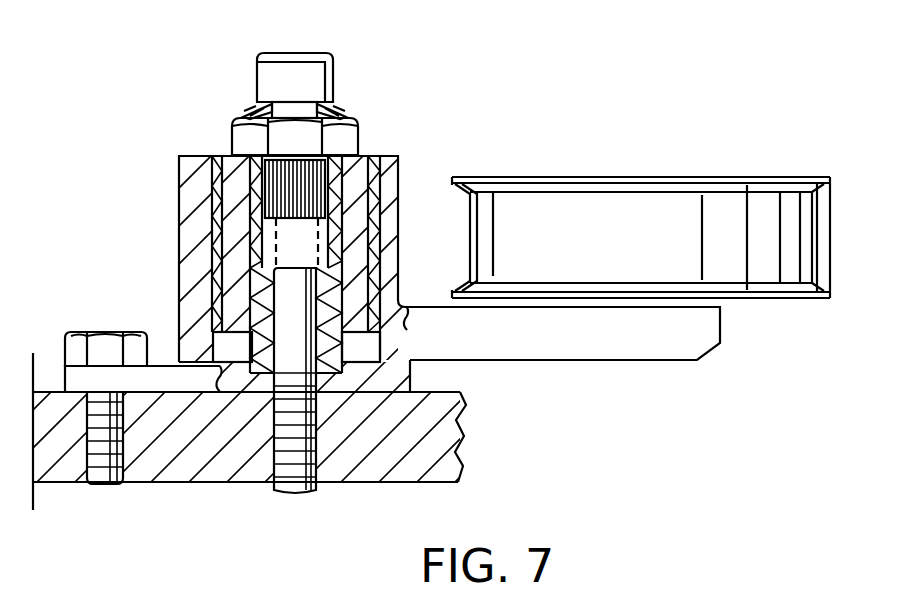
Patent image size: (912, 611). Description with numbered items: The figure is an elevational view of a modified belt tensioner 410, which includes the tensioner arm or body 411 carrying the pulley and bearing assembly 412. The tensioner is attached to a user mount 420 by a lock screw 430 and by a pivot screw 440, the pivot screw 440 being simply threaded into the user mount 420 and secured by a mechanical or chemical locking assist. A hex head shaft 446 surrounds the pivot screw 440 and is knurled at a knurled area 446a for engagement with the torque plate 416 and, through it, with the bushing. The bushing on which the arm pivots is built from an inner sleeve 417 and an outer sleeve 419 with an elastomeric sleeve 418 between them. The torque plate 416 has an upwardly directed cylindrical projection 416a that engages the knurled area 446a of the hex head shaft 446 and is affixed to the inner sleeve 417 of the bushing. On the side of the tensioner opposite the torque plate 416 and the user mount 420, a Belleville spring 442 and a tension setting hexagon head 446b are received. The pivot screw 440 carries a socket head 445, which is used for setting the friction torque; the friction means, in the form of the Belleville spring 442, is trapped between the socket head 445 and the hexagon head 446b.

The tensioner 410 is at (465, 162).
The tensioner arm or body 411 is at (641, 345).
The pulley and bearing assembly 412 is at (697, 175).
The torque plate 416 is at (157, 377).
The upwardly directed cylindrical projection 416a is at (334, 229).
The inner sleeve 417 is at (213, 160).
The elastomeric sleeve 418 is at (236, 166).
The outer sleeve 419 is at (243, 212).
The user mount 420 is at (468, 462).
The lock screw 430 is at (100, 330).
The pivot screw 440 is at (290, 478).
The Belleville spring 442 is at (333, 114).
The socket head 445 is at (303, 53).
The hex head shaft 446 is at (337, 344).
The knurled area 446a is at (312, 184).
The tension setting hexagon head 446b is at (348, 134).